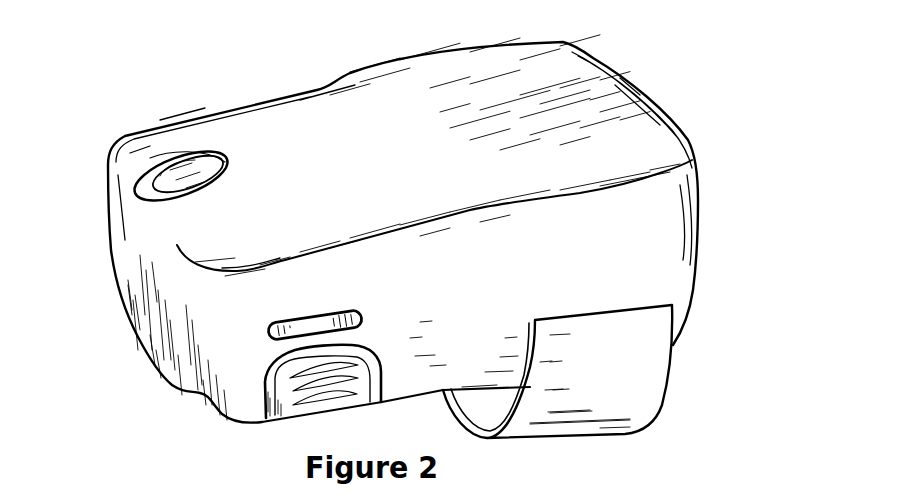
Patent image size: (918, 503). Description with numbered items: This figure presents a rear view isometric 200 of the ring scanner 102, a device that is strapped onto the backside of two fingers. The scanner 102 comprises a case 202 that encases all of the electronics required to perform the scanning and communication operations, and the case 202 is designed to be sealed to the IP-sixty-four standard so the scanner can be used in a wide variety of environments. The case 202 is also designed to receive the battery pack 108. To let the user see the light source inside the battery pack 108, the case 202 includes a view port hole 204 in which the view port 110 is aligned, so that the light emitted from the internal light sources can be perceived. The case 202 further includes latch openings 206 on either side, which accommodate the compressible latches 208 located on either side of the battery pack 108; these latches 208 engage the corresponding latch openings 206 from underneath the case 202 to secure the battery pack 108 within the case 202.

The ring scanner 102 is at (656, 63).
The rear view isometric 200 is at (443, 217).
The battery pack 108 is at (112, 378).
The case 202 is at (135, 278).
The view port 110 is at (177, 172).
The view port hole 204 is at (201, 160).
The latch openings 206 is at (363, 312).
The compressible latches 208 is at (333, 400).